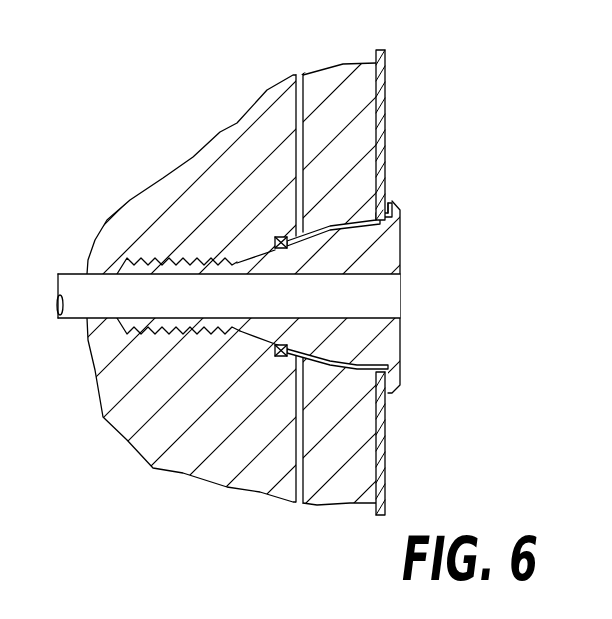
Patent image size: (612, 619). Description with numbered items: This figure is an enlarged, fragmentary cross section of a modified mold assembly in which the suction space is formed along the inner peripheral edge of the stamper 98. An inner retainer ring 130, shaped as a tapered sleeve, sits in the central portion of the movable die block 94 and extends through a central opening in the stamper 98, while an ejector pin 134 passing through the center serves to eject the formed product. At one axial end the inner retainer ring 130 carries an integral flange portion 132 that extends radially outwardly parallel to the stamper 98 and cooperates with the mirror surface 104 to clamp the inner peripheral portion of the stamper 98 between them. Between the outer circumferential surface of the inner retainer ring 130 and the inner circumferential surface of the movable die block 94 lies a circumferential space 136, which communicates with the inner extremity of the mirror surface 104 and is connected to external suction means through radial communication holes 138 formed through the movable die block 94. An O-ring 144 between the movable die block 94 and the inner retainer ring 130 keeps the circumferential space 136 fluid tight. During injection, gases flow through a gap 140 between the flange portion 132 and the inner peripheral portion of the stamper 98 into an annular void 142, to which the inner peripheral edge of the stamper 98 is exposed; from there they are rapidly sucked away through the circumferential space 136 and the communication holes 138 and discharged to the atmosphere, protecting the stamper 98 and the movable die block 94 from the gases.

The movable die block 94 is at (255, 140).
The stamper 98 is at (385, 80).
The mirror surface 104 is at (378, 458).
The inner retainer ring 130 is at (409, 246).
The flange portion 132 is at (398, 213).
The ejector pin 134 is at (385, 300).
The circumferential space 136 is at (335, 357).
The radial communication holes 138 is at (303, 96).
The gap 140 is at (383, 203).
The annular void 142 is at (390, 370).
The O-ring 144 is at (280, 240).